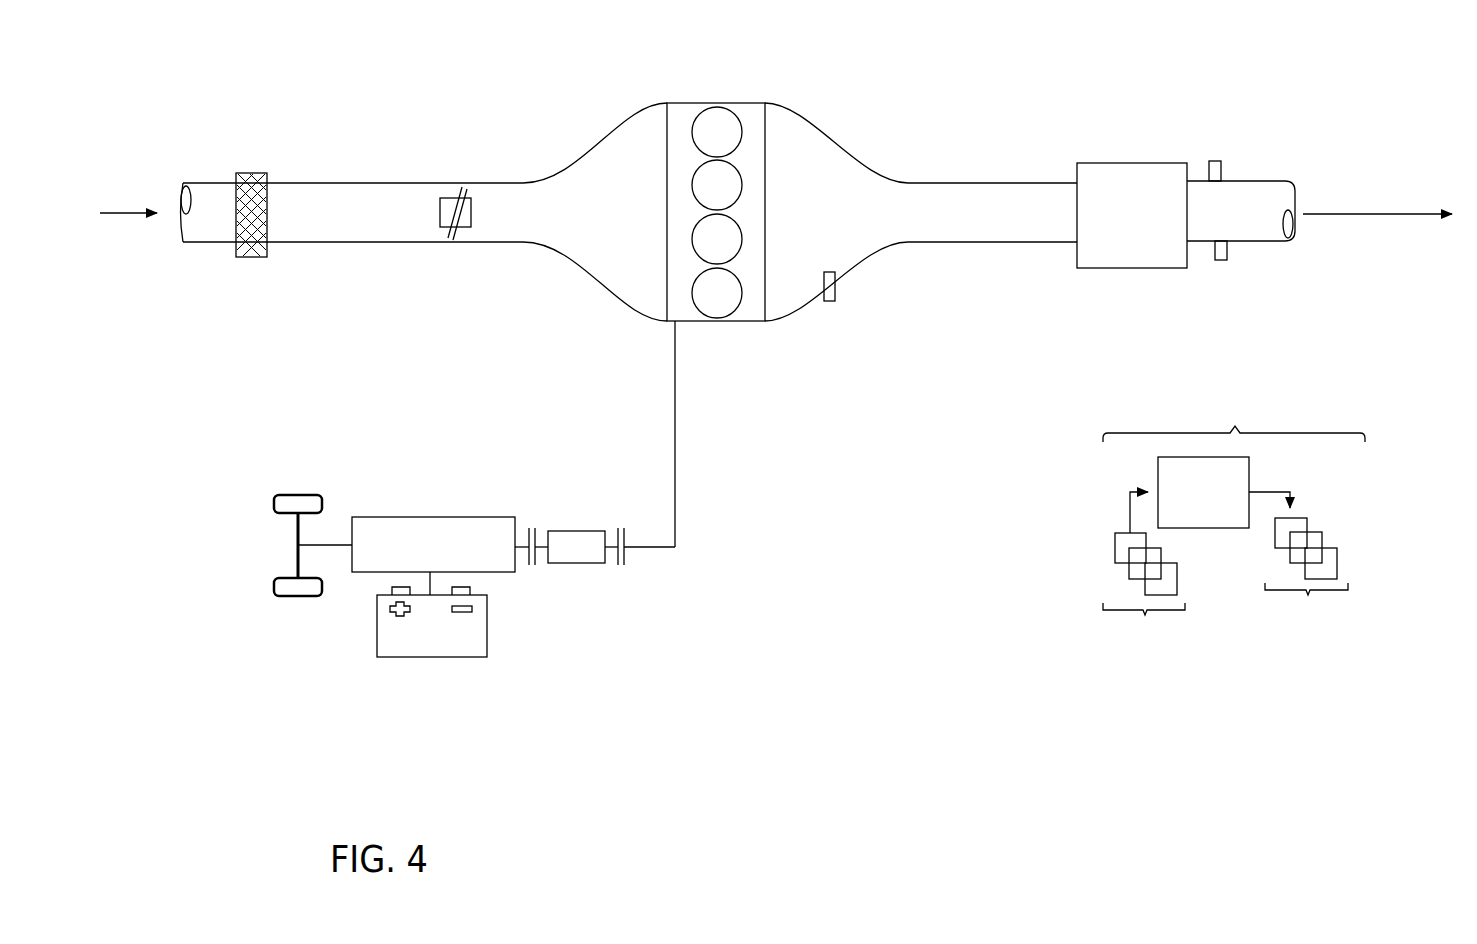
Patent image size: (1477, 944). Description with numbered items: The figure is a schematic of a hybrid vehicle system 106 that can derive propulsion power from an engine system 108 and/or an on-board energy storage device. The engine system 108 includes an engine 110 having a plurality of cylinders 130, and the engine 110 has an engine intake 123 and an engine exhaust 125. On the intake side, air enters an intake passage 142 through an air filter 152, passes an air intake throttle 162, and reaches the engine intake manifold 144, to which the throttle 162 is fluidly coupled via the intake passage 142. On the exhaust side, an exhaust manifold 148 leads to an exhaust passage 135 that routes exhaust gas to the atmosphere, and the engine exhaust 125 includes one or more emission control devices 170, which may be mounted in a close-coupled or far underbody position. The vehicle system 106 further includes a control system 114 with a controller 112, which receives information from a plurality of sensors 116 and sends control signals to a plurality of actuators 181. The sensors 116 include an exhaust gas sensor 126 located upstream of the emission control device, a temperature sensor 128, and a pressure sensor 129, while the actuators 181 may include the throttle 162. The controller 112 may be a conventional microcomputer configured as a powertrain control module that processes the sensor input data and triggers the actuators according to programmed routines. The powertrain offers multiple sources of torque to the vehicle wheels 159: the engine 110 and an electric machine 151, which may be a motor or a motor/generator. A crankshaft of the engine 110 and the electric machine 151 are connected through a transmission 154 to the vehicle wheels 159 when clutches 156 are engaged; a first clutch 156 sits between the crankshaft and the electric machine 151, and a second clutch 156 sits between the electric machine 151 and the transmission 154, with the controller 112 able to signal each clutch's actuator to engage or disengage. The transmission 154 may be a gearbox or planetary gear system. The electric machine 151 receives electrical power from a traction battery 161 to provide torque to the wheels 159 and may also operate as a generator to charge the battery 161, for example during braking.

The hybrid vehicle system 106 is at (200, 80).
The engine system 108 is at (1327, 74).
The engine 110 is at (736, 212).
The controller 112 is at (1203, 492).
The control system 114 is at (1234, 518).
The sensors 116 is at (1144, 574).
The engine intake 123 is at (590, 130).
The engine exhaust 125 is at (885, 135).
The exhaust gas sensor 126 is at (835, 281).
The temperature sensor 128 is at (1225, 262).
The pressure sensor 129 is at (1218, 160).
The cylinders 130 is at (742, 124).
The exhaust passage 135 is at (1268, 180).
The intake passage 142 is at (215, 243).
The engine intake manifold 144 is at (638, 222).
The exhaust manifold 148 is at (858, 222).
The electric machine 151 is at (578, 565).
The air filter 152 is at (252, 172).
The transmission 154 is at (376, 575).
The clutches 156 is at (536, 533).
The vehicle wheels 159 is at (297, 599).
The traction battery 161 is at (437, 658).
The air intake throttle 162 is at (472, 222).
The emission control devices 170 is at (1118, 163).
The actuators 181 is at (1298, 566).